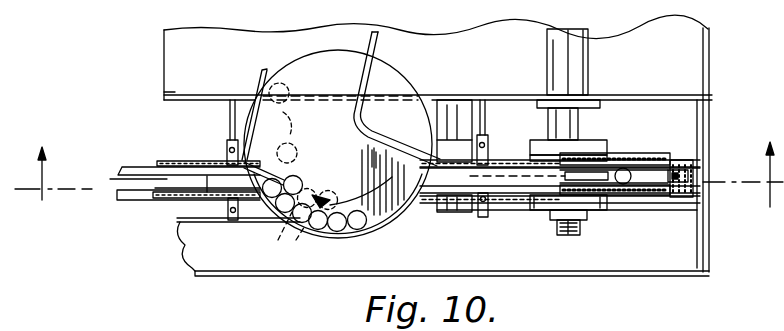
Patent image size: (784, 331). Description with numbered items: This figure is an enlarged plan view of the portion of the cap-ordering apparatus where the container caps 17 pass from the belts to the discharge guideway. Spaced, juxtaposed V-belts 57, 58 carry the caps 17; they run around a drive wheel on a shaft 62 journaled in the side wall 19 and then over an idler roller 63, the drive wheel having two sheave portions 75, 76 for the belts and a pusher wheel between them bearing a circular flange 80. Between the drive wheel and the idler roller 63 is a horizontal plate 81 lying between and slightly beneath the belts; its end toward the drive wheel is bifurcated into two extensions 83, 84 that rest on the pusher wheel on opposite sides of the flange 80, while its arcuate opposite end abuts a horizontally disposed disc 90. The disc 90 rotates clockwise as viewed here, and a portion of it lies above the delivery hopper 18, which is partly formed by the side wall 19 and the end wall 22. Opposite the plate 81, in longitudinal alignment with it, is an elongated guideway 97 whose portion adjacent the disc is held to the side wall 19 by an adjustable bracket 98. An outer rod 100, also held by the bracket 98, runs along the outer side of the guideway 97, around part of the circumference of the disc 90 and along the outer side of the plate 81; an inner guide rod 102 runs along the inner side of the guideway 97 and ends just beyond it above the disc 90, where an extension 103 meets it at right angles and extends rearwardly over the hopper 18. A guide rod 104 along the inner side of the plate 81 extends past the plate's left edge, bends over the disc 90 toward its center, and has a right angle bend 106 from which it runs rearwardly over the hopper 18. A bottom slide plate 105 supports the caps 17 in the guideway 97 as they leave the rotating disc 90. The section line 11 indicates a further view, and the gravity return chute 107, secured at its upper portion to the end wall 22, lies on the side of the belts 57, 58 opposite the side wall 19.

The section line 11 is at (399, 191).
The container caps 17 is at (718, 135).
The delivery hopper 18 is at (168, 40).
The side wall 19 is at (166, 97).
The end wall 22 is at (710, 43).
The V-belt 57 is at (665, 200).
The V-belt 58 is at (662, 160).
The shaft 62 is at (560, 125).
The idler roller 63 is at (448, 205).
The sheave portion 75 is at (640, 156).
The sheave portion 76 is at (637, 198).
The circular flange 80 is at (690, 183).
The horizontal plate 81 is at (512, 192).
The extension 83 is at (585, 226).
The extension 84 is at (575, 168).
The disc 90 is at (322, 53).
The elongated guideway 97 is at (144, 158).
The adjustable bracket 98 is at (230, 125).
The rod 100 is at (117, 201).
The guide rod 102 is at (124, 163).
The extension 103 is at (262, 74).
The guide rod 104 is at (507, 165).
The bottom slide plate 105 is at (116, 179).
The right angle bend 106 is at (358, 111).
The gravity return chute 107 is at (250, 277).